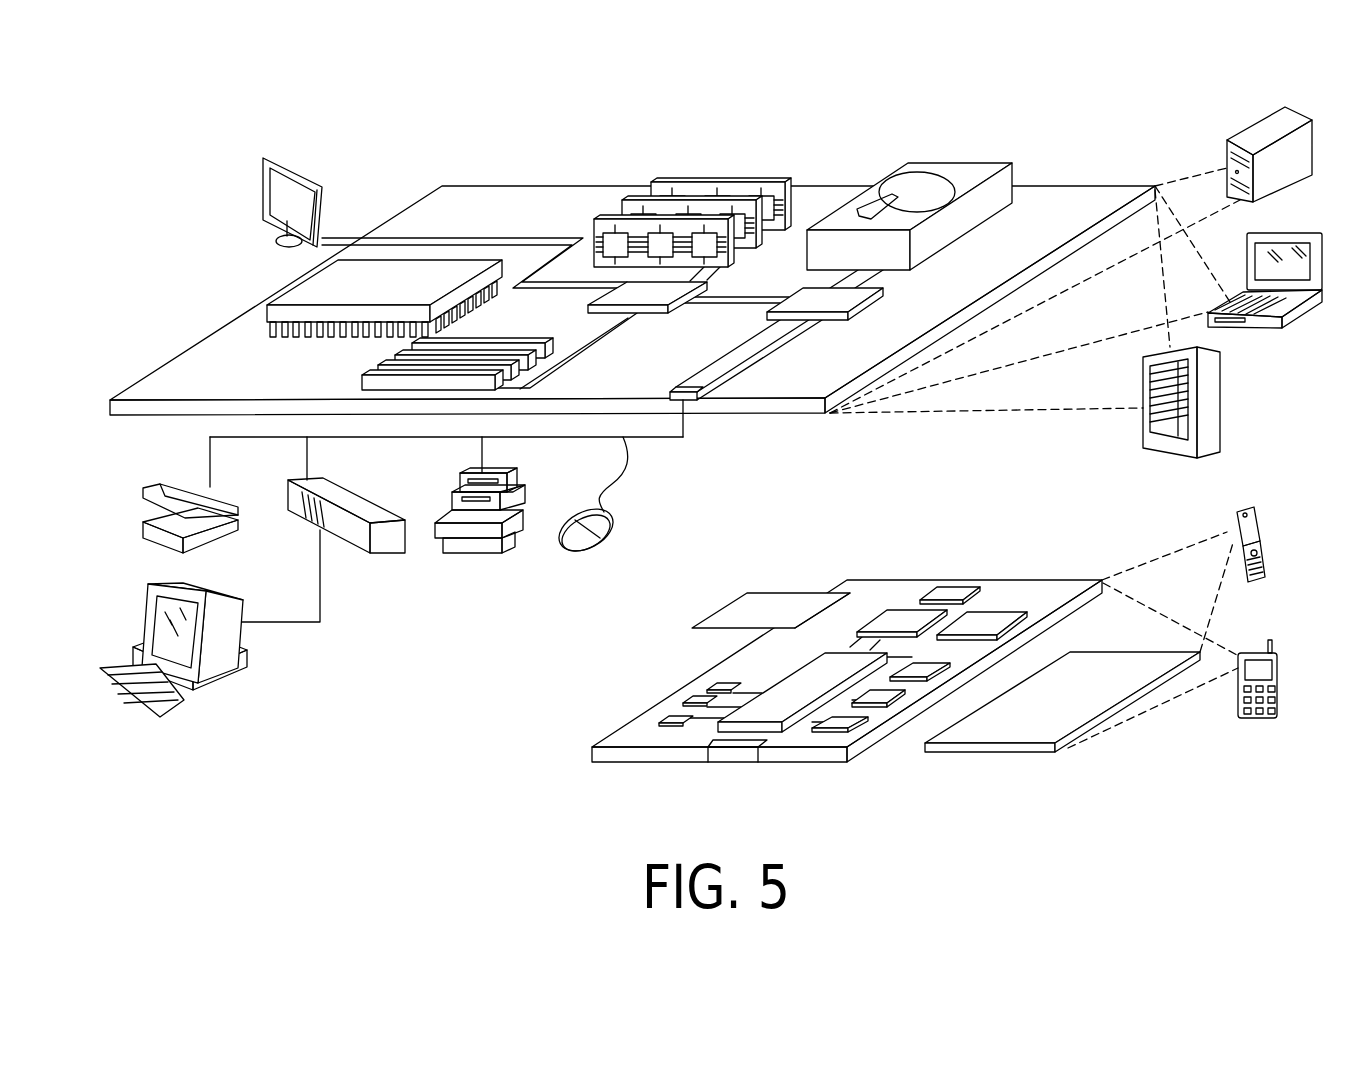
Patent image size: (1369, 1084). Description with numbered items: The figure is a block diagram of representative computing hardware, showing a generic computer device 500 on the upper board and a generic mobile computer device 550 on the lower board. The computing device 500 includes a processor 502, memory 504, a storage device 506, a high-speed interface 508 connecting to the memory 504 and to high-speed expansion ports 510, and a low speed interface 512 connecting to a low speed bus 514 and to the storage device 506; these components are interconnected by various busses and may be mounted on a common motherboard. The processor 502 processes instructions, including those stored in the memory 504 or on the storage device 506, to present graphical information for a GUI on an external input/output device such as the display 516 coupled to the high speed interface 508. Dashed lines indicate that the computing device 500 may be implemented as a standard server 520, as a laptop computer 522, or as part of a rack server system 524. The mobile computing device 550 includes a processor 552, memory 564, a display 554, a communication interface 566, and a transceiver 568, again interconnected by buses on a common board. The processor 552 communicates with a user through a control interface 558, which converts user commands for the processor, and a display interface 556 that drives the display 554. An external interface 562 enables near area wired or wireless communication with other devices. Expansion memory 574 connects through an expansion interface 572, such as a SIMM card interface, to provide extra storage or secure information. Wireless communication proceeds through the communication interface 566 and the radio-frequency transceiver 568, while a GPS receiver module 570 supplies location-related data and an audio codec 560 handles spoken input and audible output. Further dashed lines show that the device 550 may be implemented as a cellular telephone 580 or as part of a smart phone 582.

The computing device 500 is at (389, 134).
The processor 502 is at (288, 288).
The memory 504 is at (725, 180).
The storage device 506 is at (950, 163).
The high-speed interface 508 is at (658, 293).
The high-speed expansion ports 510 is at (387, 364).
The low speed interface 512 is at (800, 300).
The low speed bus 514 is at (690, 388).
The display 516 is at (263, 156).
The standard server 520 is at (1248, 135).
The laptop computer 522 is at (1298, 232).
The rack server system 524 is at (1222, 402).
The mobile computer device 550 is at (546, 772).
The processor 552 is at (772, 697).
The display 554 is at (1100, 668).
The display interface 556 is at (848, 720).
The control interface 558 is at (887, 693).
The audio codec 560 is at (927, 665).
The external interface 562 is at (733, 748).
The memory 564 is at (690, 703).
The communication interface 566 is at (902, 612).
The transceiver 568 is at (990, 613).
The GPS receiver module 570 is at (950, 590).
The expansion interface 572 is at (828, 593).
The expansion memory 574 is at (748, 593).
The cellular telephone 580 is at (1247, 507).
The smart phone 582 is at (1255, 652).